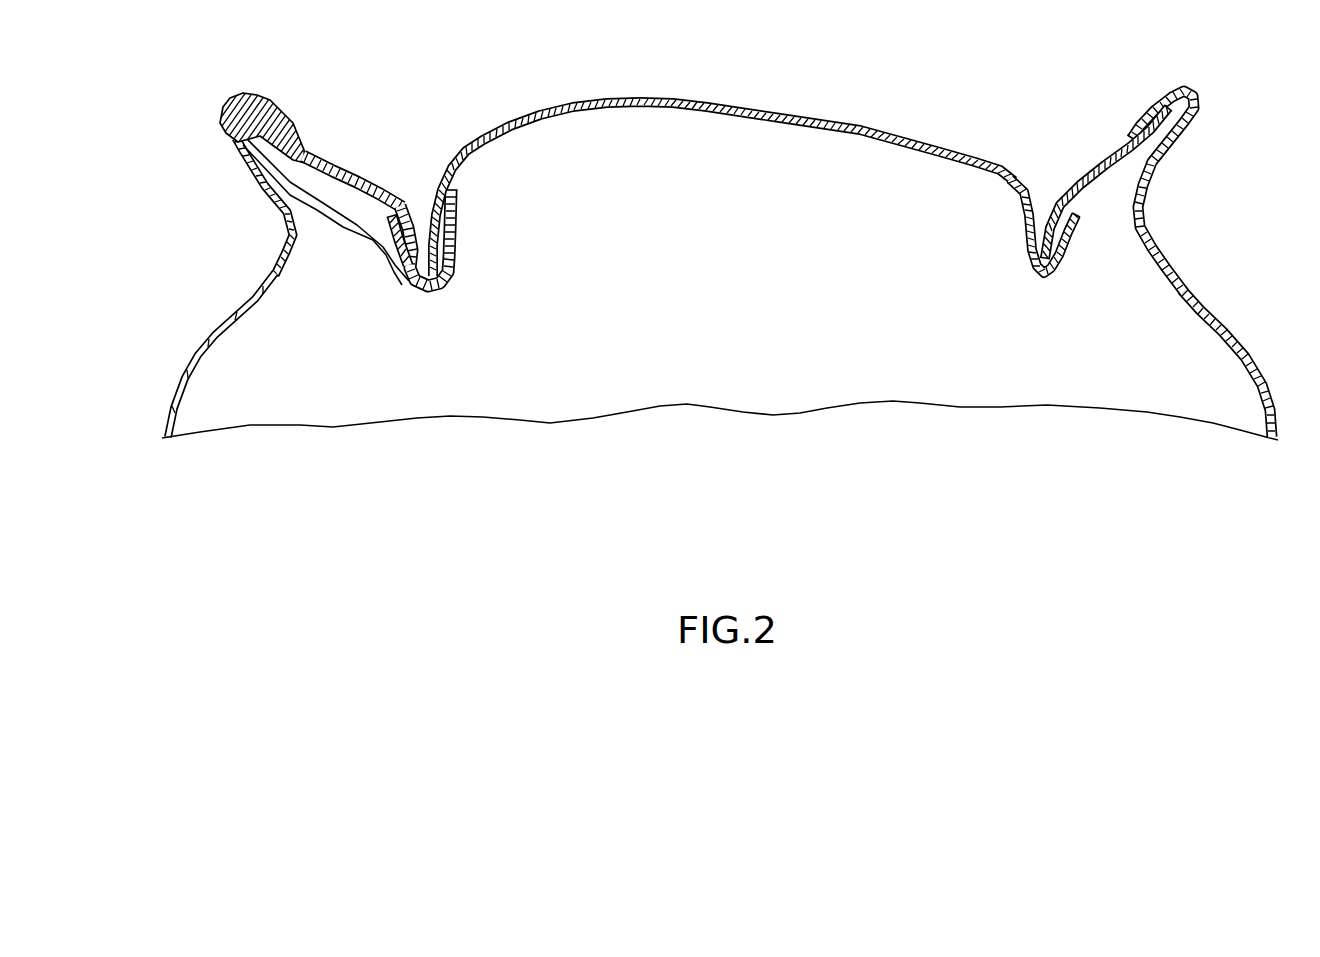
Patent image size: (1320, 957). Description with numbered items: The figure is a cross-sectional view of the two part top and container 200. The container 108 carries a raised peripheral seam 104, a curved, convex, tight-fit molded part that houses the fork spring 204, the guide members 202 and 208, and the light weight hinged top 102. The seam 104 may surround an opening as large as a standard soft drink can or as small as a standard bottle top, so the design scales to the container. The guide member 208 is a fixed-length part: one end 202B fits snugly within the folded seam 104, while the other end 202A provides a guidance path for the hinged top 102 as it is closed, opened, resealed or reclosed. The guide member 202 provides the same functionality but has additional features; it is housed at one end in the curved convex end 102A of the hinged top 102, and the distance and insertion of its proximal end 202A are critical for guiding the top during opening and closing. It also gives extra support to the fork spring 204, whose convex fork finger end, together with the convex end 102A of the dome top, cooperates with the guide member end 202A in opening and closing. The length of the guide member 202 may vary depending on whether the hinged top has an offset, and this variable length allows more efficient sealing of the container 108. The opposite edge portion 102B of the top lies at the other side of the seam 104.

The light weight hinged top 102 is at (692, 98).
The curved convex end of the hinged top 102A is at (397, 287).
The second edge portion of panel 102B is at (1066, 278).
The raised peripheral seam 104 is at (1180, 143).
The container 108 is at (1165, 282).
The two part top and container 200 is at (1084, 469).
The guide member 202 is at (368, 178).
The proximal end of the guide member 202A is at (418, 212).
The seam end of the guide member 202B is at (262, 104).
The fork spring 204 is at (432, 288).
The guide member 208 is at (1083, 188).